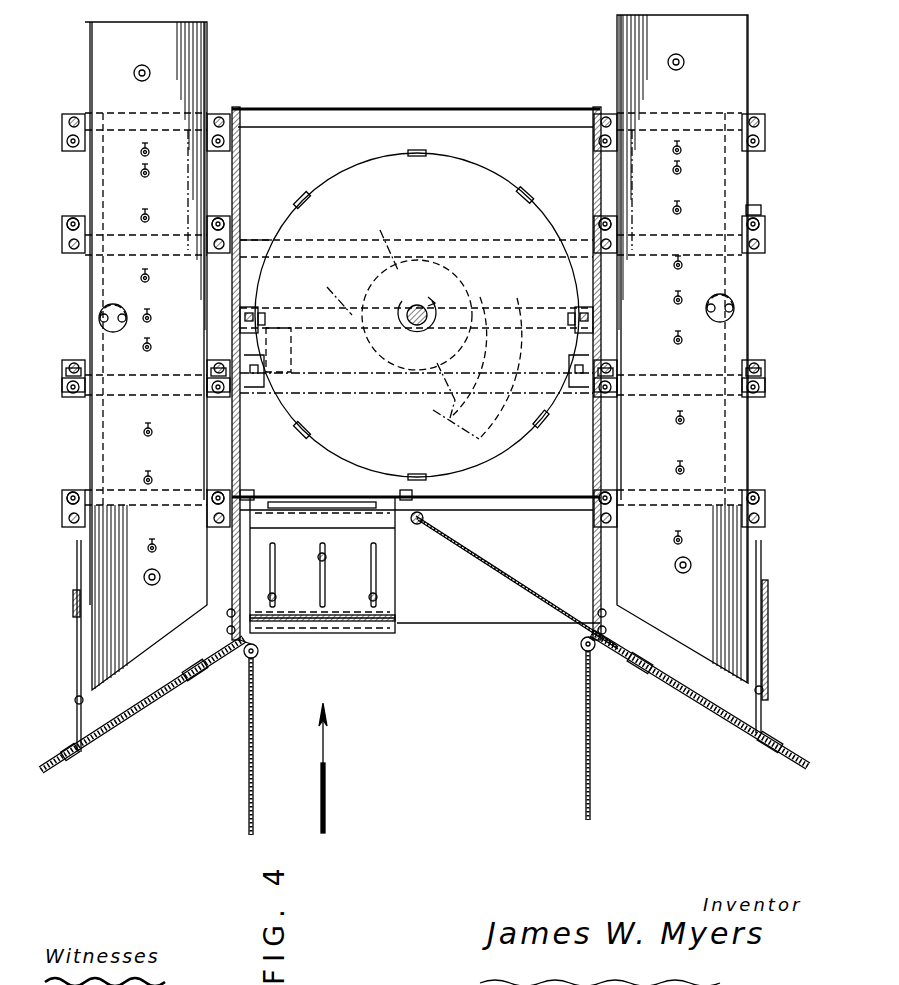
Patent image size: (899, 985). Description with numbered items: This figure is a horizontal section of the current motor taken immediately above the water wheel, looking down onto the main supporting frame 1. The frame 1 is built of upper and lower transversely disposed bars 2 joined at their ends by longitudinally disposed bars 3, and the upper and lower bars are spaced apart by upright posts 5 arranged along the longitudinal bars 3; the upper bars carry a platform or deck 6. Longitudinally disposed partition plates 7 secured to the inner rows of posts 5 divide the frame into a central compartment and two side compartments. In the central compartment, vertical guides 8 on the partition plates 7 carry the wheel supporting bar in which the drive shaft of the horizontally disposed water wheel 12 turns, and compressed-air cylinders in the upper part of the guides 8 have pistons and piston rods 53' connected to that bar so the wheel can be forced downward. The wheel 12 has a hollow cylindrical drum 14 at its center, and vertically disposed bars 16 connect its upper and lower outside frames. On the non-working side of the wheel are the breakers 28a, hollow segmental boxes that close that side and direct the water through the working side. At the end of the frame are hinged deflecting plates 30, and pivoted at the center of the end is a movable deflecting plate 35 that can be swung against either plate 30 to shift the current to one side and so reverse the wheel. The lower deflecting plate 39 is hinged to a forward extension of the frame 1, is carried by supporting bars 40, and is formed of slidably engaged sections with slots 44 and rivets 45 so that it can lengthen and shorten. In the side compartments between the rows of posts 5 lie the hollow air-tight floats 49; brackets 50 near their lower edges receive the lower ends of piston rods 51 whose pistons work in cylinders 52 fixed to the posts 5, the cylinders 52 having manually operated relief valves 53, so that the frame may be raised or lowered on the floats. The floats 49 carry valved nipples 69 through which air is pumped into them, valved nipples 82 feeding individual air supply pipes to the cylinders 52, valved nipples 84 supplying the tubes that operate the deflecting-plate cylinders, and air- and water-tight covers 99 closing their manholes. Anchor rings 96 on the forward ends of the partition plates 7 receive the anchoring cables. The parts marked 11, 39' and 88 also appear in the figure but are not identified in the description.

The main supporting frame 1 is at (392, 108).
The transversely disposed bars 2 is at (570, 108).
The longitudinally disposed bars 3 is at (84, 456).
The upright posts 5 is at (78, 118).
The platform or deck 6 is at (329, 289).
The partition plates 7 is at (242, 465).
The guides 8 is at (248, 305).
The panel fastener 11 is at (142, 65).
The water wheel 12 is at (417, 315).
The hollow cylindrical drum 14 is at (417, 284).
The vertically disposed bars 16 is at (298, 198).
The breakers 28a is at (465, 372).
The deflecting plates 30 is at (130, 713).
The movable deflecting plate 35 is at (514, 580).
The lower deflecting plate 39 is at (326, 585).
The control box bar 39' is at (322, 475).
The supporting bars 40 is at (250, 492).
The slots 44 is at (408, 568).
The rivets 45 is at (405, 600).
The floats 49 is at (416, 352).
The brackets 50 is at (70, 220).
The piston rods 51 is at (70, 376).
The cylinders 52 is at (74, 366).
The relief valves 53 is at (763, 187).
The pistons and piston rods 53' is at (408, 292).
The valved nipples 69 is at (422, 308).
The valved nipples 82 is at (408, 284).
The valved nipples 84 is at (418, 550).
The panel stud 88 is at (395, 260).
The anchor rings 96 is at (259, 651).
The covers 99 is at (100, 312).